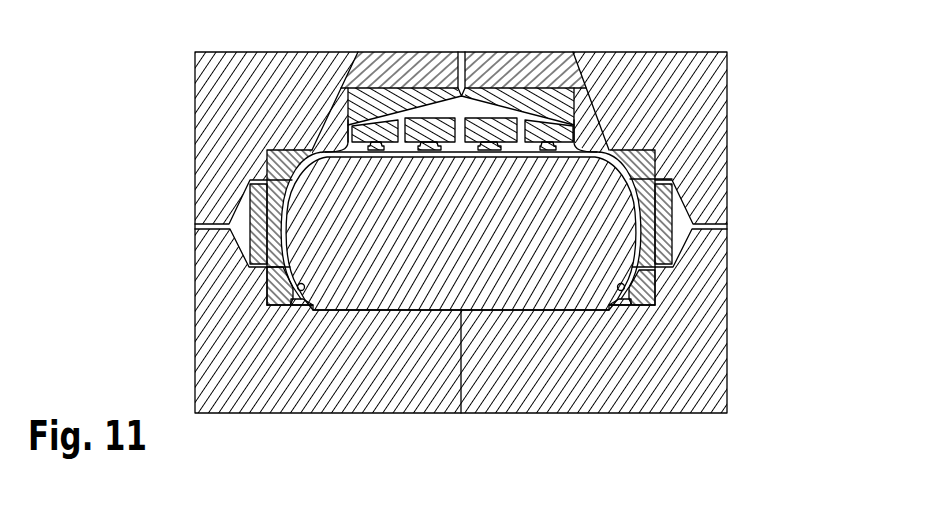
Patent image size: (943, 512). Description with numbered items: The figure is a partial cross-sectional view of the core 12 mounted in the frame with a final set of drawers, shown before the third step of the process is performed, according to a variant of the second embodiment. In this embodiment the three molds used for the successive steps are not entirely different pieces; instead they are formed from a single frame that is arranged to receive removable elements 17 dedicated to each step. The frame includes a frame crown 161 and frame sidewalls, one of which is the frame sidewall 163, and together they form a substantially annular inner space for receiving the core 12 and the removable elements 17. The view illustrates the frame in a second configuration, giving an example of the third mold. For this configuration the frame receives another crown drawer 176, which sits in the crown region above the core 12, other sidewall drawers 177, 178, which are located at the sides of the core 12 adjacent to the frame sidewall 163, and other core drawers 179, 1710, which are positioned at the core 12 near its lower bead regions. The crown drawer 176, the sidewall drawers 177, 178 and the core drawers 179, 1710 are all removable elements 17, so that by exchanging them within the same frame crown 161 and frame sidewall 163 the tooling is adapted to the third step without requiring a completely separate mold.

The core 12 is at (523, 295).
The removable elements 17 is at (752, 277).
The frame crown 161 is at (528, 62).
The frame sidewall 163 is at (220, 104).
The crown drawer 176 is at (557, 88).
The sidewall drawer 177 is at (640, 163).
The sidewall drawer 178 is at (275, 290).
The core drawer 179 is at (612, 303).
The core drawer 1710 is at (306, 302).